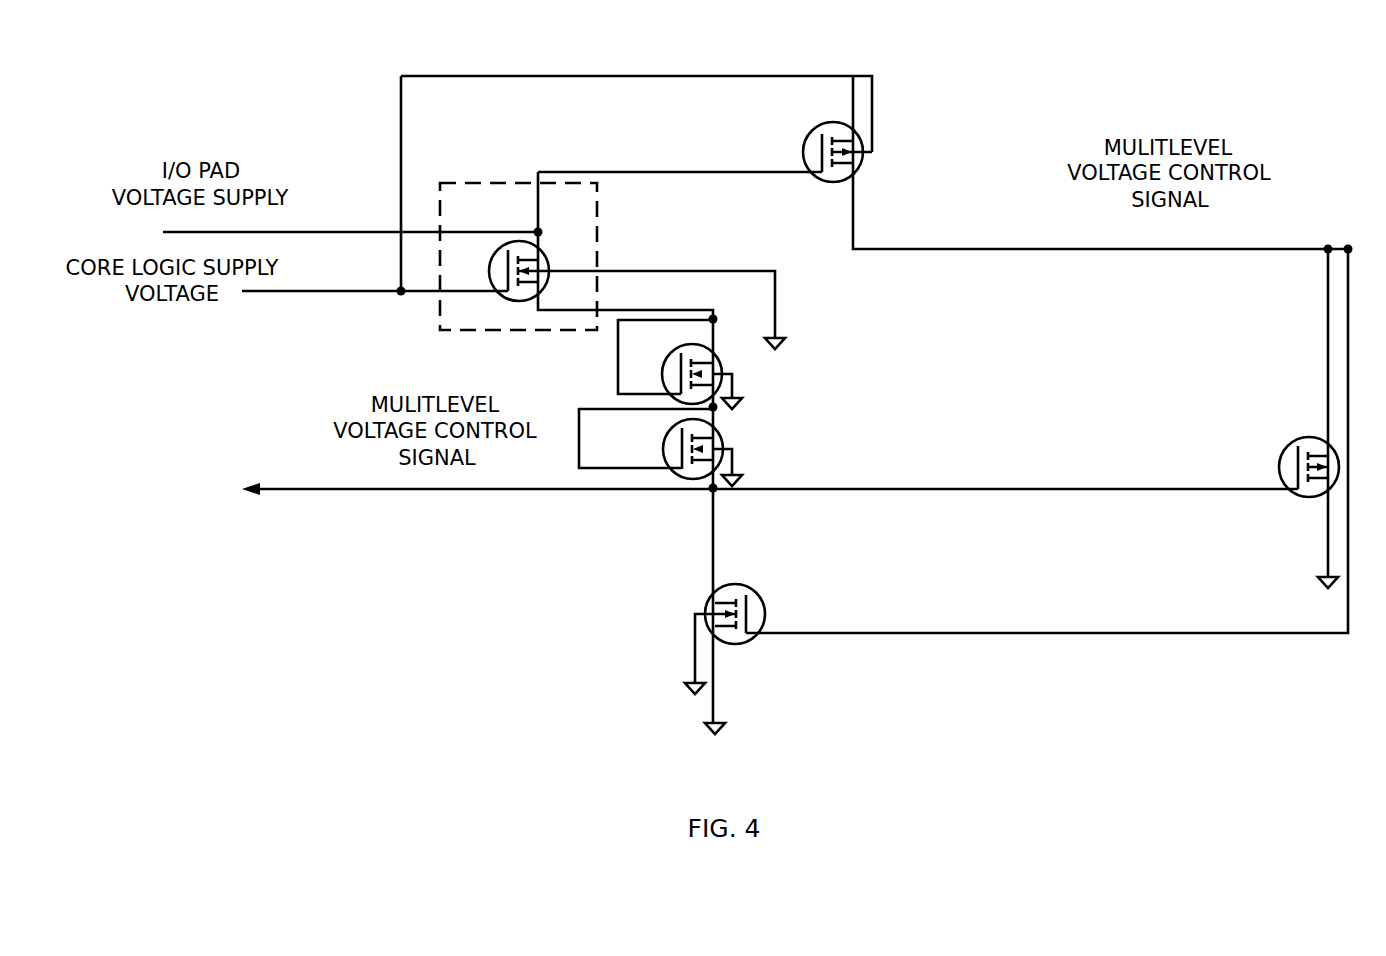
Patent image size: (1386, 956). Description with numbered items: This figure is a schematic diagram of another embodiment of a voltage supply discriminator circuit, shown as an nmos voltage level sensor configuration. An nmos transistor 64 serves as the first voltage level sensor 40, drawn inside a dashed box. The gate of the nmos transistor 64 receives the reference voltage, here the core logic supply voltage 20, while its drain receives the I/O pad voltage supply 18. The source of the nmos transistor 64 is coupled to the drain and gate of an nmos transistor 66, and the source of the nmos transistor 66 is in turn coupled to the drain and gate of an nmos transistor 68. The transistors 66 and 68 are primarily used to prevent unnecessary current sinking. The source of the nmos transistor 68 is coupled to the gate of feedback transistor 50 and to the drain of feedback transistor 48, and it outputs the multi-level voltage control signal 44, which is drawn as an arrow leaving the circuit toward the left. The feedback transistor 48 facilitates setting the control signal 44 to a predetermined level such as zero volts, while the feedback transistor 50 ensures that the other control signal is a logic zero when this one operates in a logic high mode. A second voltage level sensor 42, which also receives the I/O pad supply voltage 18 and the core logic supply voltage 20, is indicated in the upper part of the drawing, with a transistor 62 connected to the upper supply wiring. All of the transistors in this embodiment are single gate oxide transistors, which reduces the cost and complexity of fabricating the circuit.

The I/O pad supply voltage 18 is at (302, 233).
The core logic supply voltage 20 is at (303, 296).
The first voltage level sensor 40 is at (597, 193).
The second voltage level sensor 42 is at (915, 152).
The multi-level voltage control signal 44 is at (443, 493).
The feedback transistor 48 is at (764, 605).
The feedback transistor 50 is at (1283, 461).
The transistor 62 is at (814, 152).
The nmos transistor 64 is at (540, 256).
The nmos transistor 66 is at (658, 370).
The nmos transistor 68 is at (720, 430).